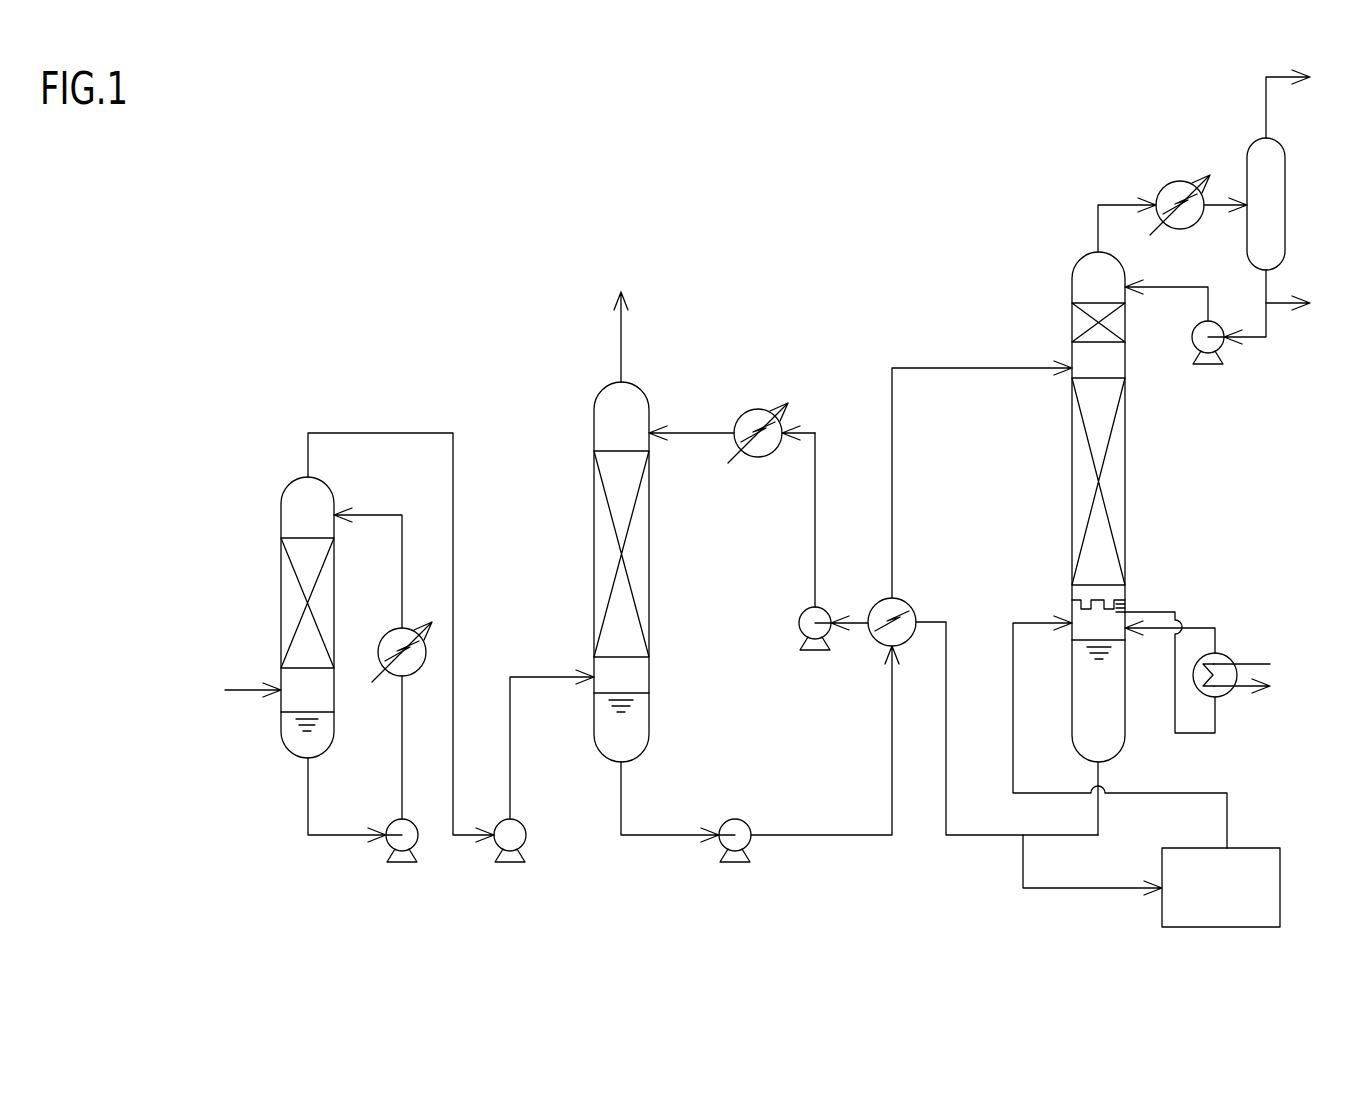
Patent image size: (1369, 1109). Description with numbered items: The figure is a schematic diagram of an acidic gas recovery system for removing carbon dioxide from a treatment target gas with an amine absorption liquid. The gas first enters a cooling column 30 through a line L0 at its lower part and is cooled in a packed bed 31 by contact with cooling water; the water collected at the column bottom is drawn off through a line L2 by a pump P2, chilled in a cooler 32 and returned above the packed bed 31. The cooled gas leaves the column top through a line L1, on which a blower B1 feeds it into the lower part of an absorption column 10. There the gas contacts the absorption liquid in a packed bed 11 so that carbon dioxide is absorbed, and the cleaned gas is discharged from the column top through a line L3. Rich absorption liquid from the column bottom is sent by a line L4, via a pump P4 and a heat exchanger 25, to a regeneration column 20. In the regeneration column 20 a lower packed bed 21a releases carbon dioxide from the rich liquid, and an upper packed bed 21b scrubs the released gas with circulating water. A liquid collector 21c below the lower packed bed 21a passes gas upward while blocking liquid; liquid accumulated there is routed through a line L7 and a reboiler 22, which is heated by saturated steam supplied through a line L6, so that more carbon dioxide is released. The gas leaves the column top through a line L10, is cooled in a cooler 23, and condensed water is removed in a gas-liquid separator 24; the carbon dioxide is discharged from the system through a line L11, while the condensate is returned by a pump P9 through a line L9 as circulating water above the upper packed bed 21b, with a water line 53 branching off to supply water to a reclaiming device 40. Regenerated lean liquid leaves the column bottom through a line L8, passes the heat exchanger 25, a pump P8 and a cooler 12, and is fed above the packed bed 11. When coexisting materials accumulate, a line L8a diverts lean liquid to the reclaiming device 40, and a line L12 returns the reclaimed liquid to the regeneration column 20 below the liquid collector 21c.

The absorption column 10 is at (574, 534).
The packed bed 11 is at (605, 550).
The cooler 12 is at (765, 462).
The regeneration column 20 is at (1094, 464).
The lower packed bed 21a is at (1115, 480).
The upper packed bed 21b is at (1078, 322).
The liquid collector 21c is at (1065, 600).
The reboiler 22 is at (1225, 655).
The cooler 23 is at (1175, 182).
The gas-liquid separator 24 is at (1287, 205).
The heat exchanger 25 is at (900, 600).
The cooling column 30 is at (261, 585).
The packed bed 31 is at (290, 605).
The cooler 32 is at (388, 630).
The reclaiming device 40 is at (1225, 930).
The water line 53 is at (1280, 308).
The blower B1 is at (530, 838).
The pump P2 is at (403, 864).
The pump P4 is at (735, 865).
The pump P8 is at (795, 637).
The pump P9 is at (1210, 365).
The line L0 is at (248, 688).
The line L1 is at (384, 432).
The line L2 is at (325, 833).
The line L3 is at (625, 345).
The line L4 is at (620, 775).
The line L6 is at (1260, 660).
The line L7 is at (1190, 735).
The line L8 is at (983, 838).
The line L8a is at (1047, 890).
The line L9 is at (1175, 290).
The line L10 is at (1098, 218).
The line L11 is at (1265, 100).
The line L12 is at (1013, 725).